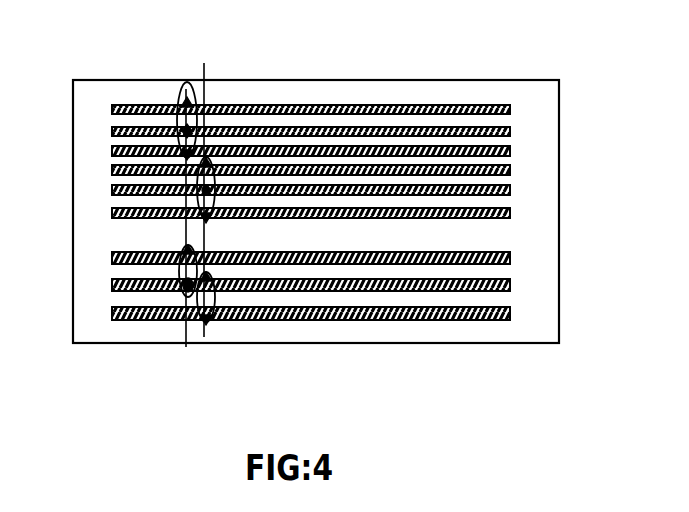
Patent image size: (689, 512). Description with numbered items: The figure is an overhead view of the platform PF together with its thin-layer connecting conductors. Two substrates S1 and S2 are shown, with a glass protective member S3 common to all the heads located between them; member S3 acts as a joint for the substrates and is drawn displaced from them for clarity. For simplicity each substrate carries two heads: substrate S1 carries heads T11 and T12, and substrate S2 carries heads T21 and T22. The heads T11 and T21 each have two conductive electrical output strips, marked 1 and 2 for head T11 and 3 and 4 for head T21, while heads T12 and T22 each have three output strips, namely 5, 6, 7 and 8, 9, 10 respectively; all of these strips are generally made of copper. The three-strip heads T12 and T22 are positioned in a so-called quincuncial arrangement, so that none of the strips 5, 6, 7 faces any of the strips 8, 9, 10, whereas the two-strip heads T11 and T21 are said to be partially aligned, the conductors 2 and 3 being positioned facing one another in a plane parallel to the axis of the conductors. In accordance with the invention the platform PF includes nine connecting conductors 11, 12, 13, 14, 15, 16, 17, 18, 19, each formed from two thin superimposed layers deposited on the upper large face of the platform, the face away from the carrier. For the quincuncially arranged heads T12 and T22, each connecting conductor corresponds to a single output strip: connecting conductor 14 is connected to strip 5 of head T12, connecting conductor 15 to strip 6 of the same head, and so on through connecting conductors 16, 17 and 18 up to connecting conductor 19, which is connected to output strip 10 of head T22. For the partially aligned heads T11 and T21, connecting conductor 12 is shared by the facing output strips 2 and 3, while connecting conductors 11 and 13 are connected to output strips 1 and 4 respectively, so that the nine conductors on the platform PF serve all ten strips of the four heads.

The output strip 1 is at (207, 322).
The output strip 2 is at (218, 300).
The output strip 3 is at (181, 297).
The output strip 4 is at (188, 252).
The output strip 5 is at (207, 218).
The output strip 6 is at (213, 200).
The output strip 7 is at (216, 172).
The output strip 8 is at (165, 147).
The output strip 9 is at (172, 131).
The output strip 10 is at (188, 97).
The connecting conductor 11 is at (510, 313).
The connecting conductor 12 is at (510, 285).
The connecting conductor 13 is at (510, 258).
The connecting conductor 14 is at (510, 213).
The connecting conductor 15 is at (510, 190).
The connecting conductor 16 is at (510, 170).
The connecting conductor 17 is at (510, 151).
The connecting conductor 18 is at (510, 131).
The connecting conductor 19 is at (510, 110).
The head T11 is at (214, 300).
The head T12 is at (215, 170).
The head T21 is at (180, 282).
The head T22 is at (189, 85).
The substrate S1 is at (417, 80).
The substrate S2 is at (100, 92).
The glass protective member S3 is at (204, 70).
The platform PF is at (90, 272).